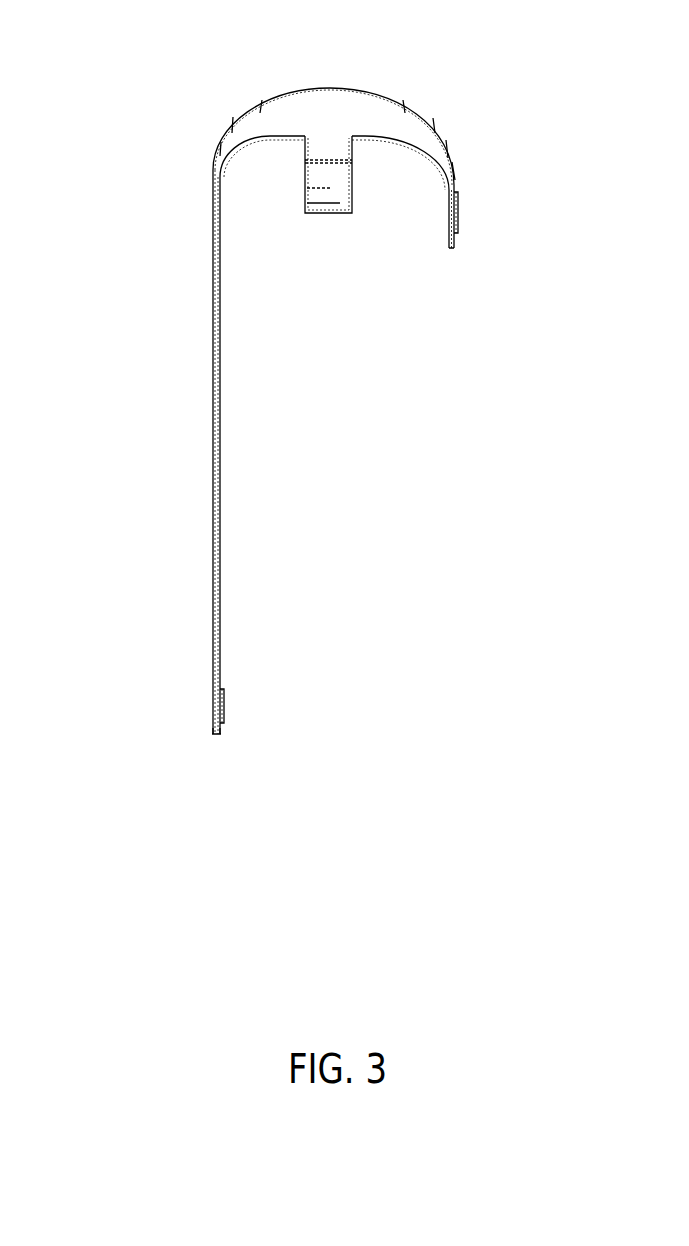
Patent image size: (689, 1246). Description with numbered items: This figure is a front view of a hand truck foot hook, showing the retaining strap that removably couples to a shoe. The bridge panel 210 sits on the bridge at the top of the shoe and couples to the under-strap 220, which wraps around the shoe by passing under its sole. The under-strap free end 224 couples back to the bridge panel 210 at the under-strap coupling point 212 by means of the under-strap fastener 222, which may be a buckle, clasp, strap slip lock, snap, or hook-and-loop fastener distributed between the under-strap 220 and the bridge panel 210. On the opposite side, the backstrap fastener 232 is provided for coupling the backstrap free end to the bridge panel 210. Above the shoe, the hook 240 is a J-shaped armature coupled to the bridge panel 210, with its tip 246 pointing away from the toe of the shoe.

The bridge panel 210 is at (235, 113).
The under-strap coupling point 212 is at (452, 250).
The under-strap 220 is at (213, 418).
The under-strap fastener 222 is at (460, 212).
The under-strap free end 224 is at (216, 734).
The backstrap fastener 232 is at (455, 172).
The hook 240 is at (372, 275).
The tip 246 is at (330, 163).